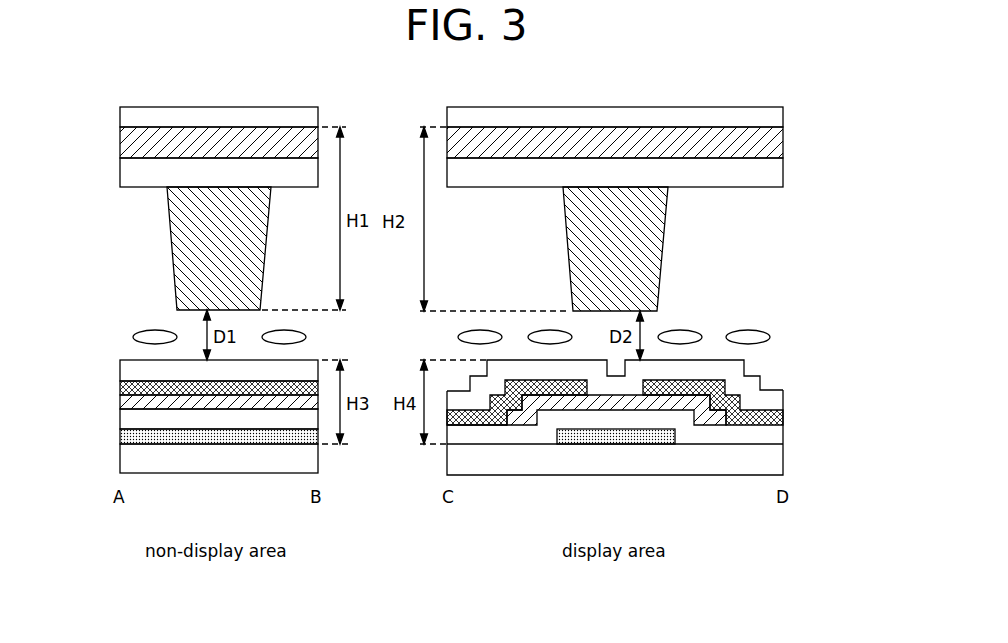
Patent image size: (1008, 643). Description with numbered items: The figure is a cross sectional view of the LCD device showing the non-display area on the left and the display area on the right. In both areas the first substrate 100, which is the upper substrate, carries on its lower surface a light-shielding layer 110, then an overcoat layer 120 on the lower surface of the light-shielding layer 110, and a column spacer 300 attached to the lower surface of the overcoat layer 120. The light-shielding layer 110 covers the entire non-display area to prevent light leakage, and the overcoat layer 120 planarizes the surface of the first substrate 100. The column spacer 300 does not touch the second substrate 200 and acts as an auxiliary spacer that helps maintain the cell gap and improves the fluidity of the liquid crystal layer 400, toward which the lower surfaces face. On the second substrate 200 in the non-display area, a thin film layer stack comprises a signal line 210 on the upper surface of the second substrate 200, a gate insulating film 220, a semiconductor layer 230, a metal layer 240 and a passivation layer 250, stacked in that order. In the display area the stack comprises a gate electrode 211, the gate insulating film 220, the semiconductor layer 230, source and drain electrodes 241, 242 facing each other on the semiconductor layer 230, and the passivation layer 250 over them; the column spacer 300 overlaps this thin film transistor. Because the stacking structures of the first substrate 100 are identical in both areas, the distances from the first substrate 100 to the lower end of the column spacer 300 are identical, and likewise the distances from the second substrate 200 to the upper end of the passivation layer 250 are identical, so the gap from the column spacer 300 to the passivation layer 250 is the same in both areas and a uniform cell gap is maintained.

The first substrate 100 is at (128, 122).
The light-shielding layer 110 is at (128, 144).
The overcoat layer 120 is at (128, 176).
The column spacer 300 is at (172, 223).
The liquid crystal layer 400 is at (141, 318).
The second substrate 200 is at (130, 463).
The signal line 210 is at (128, 438).
The gate electrode 211 is at (613, 438).
The gate insulating film 220 is at (128, 418).
The semiconductor layer 230 is at (128, 404).
The metal layer 240 is at (128, 388).
The source electrode 241 is at (492, 420).
The drain electrode 242 is at (748, 420).
The passivation layer 250 is at (128, 367).